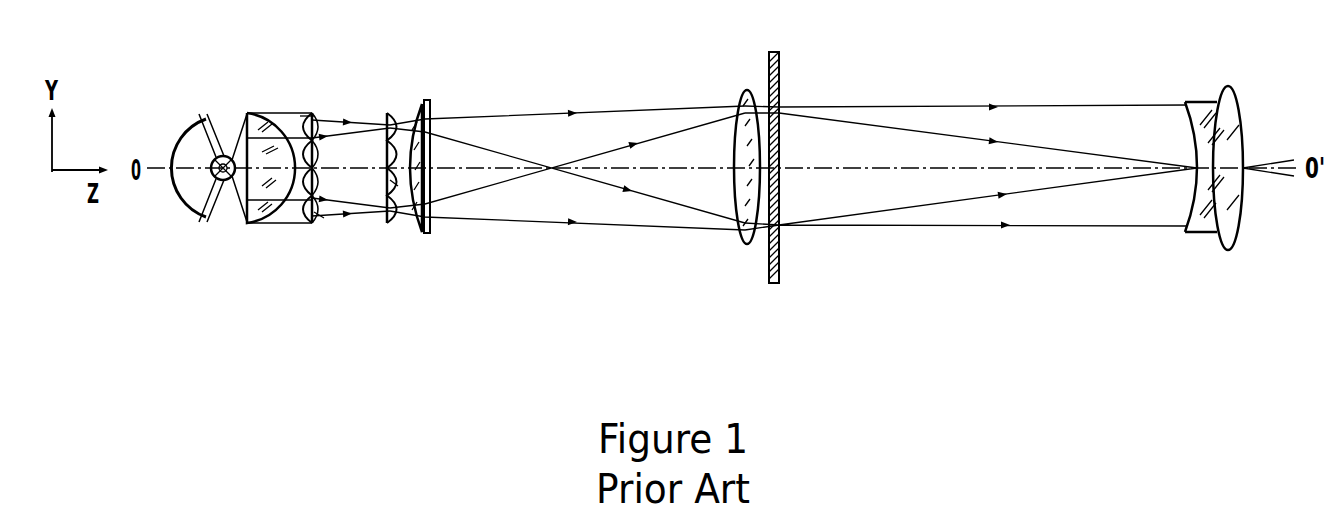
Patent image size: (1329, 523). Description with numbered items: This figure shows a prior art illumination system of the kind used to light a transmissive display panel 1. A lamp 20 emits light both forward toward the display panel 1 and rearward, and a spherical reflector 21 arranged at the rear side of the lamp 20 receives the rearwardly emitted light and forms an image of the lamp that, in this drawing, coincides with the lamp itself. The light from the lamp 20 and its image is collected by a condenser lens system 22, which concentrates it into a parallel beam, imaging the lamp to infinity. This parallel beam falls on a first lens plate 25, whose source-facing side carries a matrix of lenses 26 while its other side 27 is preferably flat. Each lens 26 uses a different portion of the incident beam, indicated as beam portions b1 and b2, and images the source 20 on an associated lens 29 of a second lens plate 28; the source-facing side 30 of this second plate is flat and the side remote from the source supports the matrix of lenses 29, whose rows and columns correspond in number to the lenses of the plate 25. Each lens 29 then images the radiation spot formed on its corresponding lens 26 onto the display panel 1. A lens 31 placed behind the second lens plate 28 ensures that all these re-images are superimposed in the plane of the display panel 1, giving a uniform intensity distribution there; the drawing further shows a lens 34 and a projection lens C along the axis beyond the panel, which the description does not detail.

The display panel 1 is at (768, 280).
The lamp 20 is at (222, 182).
The spherical reflector 21 is at (186, 208).
The condenser lens system 22 is at (258, 226).
The first lens plate 25 is at (300, 226).
The lenses of the first lens plate 26 is at (303, 118).
The other side of the first lens plate 27 is at (322, 216).
The second lens plate 28 is at (397, 114).
The lenses of the second lens plate 29 is at (410, 231).
The source-facing side of the second lens plate 30 is at (395, 186).
The lens 31 is at (432, 233).
The condenser lens 34 is at (746, 242).
The first partial light beam b1 is at (323, 120).
The second partial light beam b2 is at (344, 216).
The projection lens C is at (1239, 185).